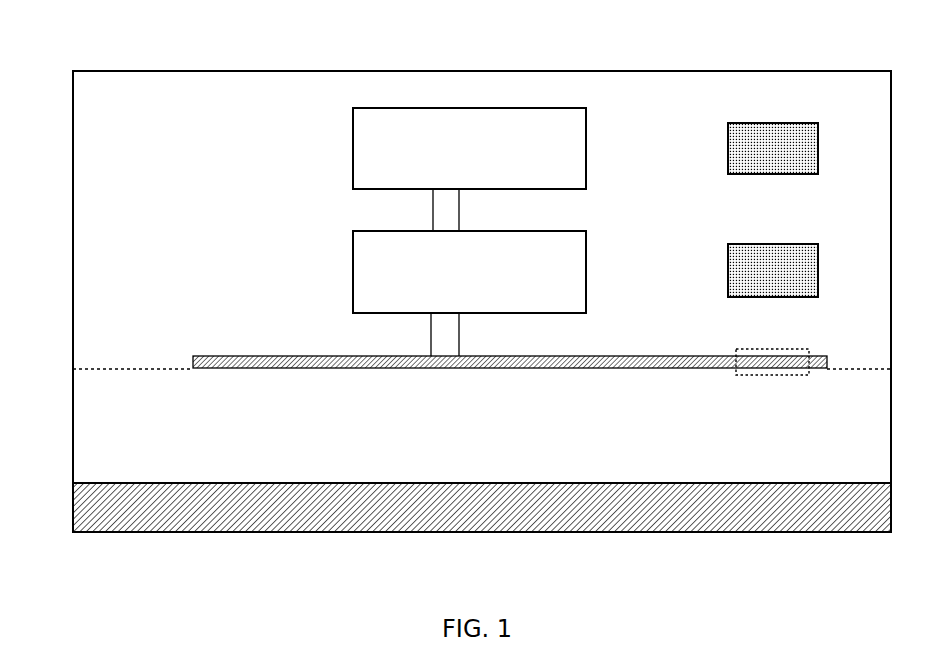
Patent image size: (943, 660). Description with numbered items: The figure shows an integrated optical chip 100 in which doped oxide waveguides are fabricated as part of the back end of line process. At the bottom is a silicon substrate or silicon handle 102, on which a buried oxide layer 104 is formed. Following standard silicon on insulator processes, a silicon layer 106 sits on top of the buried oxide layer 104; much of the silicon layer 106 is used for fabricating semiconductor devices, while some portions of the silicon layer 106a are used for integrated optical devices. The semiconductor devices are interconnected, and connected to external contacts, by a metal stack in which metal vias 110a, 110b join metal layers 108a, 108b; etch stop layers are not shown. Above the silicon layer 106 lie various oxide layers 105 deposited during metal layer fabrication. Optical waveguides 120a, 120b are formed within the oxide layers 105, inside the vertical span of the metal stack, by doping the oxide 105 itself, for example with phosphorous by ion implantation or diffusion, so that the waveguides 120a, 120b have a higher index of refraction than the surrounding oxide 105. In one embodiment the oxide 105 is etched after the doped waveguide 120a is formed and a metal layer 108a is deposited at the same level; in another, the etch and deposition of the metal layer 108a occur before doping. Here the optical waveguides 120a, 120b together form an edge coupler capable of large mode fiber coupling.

The integrated optical chip 100 is at (100, 70).
The silicon substrate 102 is at (76, 511).
The buried oxide layer 104 is at (88, 436).
The oxide layers 105 is at (92, 263).
The silicon layer 106 is at (228, 360).
The portion of the silicon layer 106a is at (746, 350).
The metal layer 108a is at (358, 278).
The metal layer 108b is at (358, 155).
The metal via 110a is at (446, 338).
The metal via 110b is at (446, 216).
The optical waveguide 120a is at (743, 276).
The optical waveguide 120b is at (740, 154).